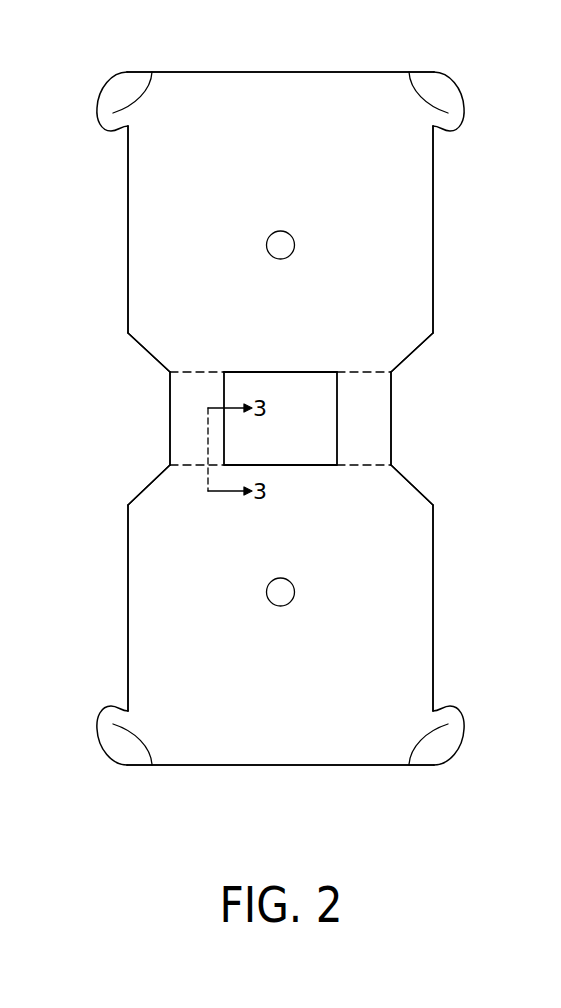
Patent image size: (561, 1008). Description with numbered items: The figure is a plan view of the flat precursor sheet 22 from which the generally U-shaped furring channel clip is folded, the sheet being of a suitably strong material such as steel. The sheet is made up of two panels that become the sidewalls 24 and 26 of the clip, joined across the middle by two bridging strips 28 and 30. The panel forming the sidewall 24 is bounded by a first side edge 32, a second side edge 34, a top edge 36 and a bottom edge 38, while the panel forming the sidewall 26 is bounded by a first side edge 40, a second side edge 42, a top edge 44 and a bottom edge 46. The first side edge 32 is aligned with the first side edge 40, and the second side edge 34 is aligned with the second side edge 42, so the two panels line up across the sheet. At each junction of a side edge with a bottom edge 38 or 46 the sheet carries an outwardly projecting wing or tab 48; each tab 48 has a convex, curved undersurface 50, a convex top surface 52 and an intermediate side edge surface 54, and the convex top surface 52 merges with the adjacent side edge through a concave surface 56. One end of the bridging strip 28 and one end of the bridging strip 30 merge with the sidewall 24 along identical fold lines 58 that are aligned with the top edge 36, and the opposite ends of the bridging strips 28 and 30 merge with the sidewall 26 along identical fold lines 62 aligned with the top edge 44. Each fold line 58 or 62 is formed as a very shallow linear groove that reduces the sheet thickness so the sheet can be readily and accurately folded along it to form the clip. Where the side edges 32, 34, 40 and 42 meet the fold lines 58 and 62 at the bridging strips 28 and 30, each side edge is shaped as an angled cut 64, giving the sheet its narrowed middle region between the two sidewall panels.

The precursor sheet 22 is at (362, 72).
The sidewall 24 is at (284, 661).
The sidewall 26 is at (294, 172).
The bridging strip 28 is at (168, 389).
The bridging strip 30 is at (373, 388).
The first side edge 32 is at (128, 589).
The second side edge 34 is at (433, 588).
The top edge 36 is at (268, 464).
The bottom edge 38 is at (261, 765).
The first side edge 40 is at (128, 229).
The second side edge 42 is at (433, 220).
The top edge 44 is at (293, 372).
The bottom edge 46 is at (260, 72).
The tab 48 is at (152, 73).
The convex curved undersurface 50 is at (100, 93).
The convex top surface 52 is at (100, 133).
The intermediate side edge surface 54 is at (97, 118).
The concave surface 56 is at (118, 129).
The fold line 58 is at (185, 468).
The fold line 62 is at (212, 372).
The angled cut 64 is at (145, 344).